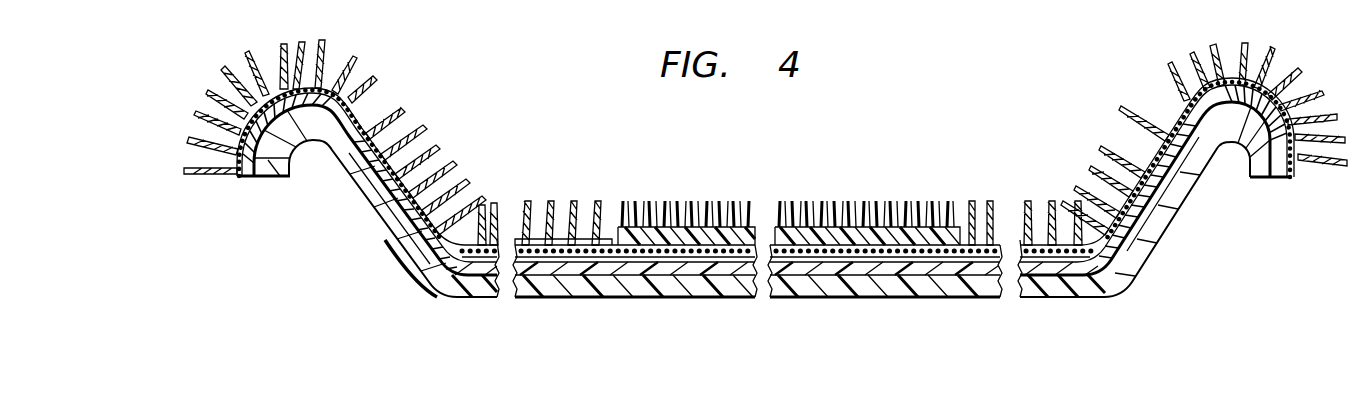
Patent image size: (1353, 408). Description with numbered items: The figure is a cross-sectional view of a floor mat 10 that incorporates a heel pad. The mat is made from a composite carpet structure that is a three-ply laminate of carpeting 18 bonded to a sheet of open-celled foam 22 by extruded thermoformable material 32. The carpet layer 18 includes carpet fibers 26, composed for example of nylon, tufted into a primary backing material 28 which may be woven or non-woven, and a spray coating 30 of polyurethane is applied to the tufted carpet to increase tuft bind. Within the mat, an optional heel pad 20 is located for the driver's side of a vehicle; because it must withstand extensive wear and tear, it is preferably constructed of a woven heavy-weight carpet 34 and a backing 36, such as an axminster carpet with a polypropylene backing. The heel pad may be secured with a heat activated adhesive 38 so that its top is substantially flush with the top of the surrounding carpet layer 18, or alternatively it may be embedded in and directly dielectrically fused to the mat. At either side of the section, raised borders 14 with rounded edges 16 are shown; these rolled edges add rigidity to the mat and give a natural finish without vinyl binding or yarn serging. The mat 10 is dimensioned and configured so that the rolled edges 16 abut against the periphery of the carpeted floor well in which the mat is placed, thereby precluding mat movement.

The mat 10 is at (604, 339).
The raised borders 14 is at (350, 190).
The rounded edges 16 is at (257, 180).
The carpeting 18 is at (541, 191).
The heel pad 20 is at (650, 190).
The sheet of open-celled foam 22 is at (1113, 275).
The carpet fibers 26 is at (1157, 65).
The primary backing material 28 is at (1291, 178).
The spray coating 30 is at (410, 200).
The extruded thermoformable material 32 is at (1134, 217).
The woven heavy-weight carpet 34 is at (903, 202).
The backing 36 is at (762, 205).
The heat activated adhesive 38 is at (775, 244).